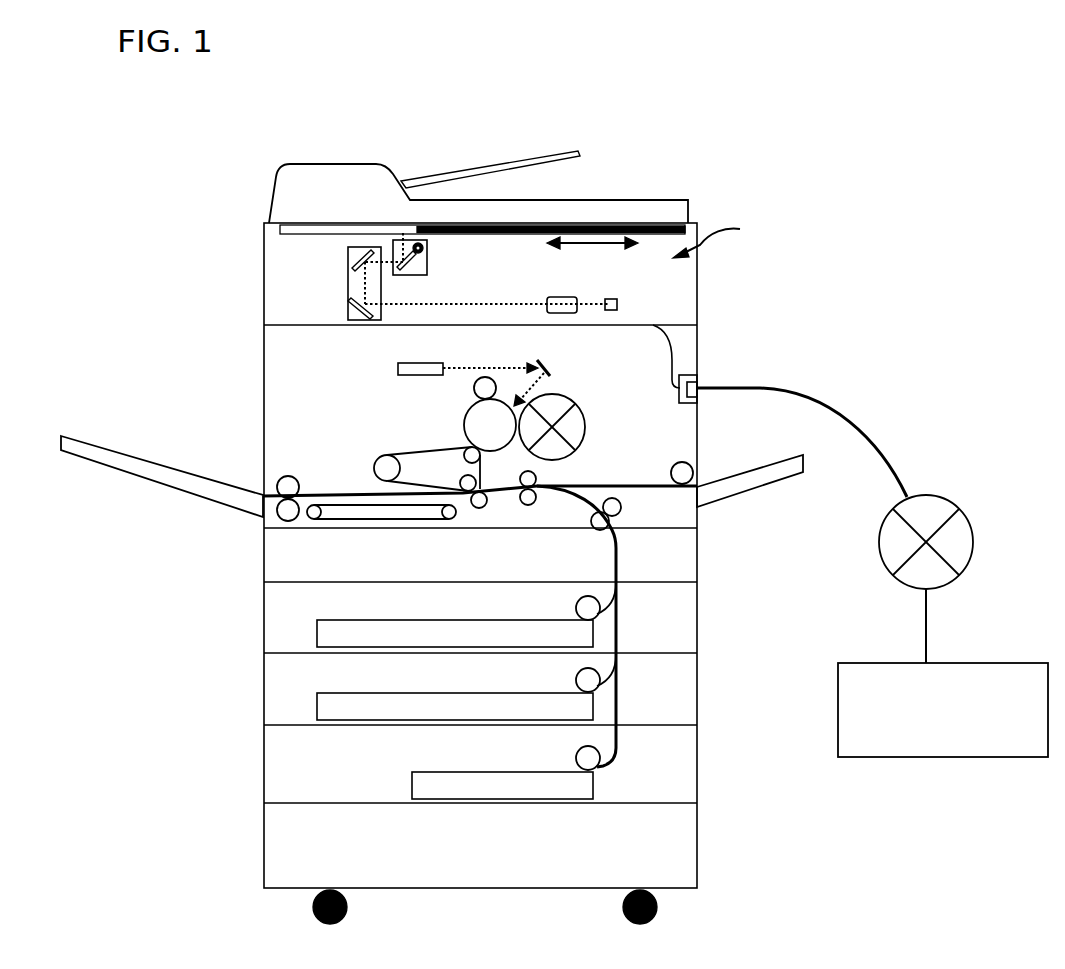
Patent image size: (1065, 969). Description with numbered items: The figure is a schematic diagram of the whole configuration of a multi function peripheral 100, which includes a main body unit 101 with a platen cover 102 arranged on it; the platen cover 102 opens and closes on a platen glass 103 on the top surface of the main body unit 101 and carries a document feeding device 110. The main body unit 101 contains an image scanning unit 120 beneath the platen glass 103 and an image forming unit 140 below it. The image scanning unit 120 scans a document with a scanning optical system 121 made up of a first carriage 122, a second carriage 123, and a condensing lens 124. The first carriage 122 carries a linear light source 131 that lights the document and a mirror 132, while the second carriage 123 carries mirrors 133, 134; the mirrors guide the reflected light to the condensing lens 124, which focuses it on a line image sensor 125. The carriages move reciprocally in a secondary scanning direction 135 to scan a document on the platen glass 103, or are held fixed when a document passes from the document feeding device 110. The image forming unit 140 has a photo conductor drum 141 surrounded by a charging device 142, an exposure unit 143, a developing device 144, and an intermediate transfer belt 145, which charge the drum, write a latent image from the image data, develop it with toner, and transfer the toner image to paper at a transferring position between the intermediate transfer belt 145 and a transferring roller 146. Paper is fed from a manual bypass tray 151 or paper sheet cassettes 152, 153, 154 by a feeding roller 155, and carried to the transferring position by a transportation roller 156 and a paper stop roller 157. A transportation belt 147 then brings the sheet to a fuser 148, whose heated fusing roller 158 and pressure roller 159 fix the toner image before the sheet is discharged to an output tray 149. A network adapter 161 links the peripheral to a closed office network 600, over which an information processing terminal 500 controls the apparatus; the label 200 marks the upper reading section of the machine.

The multi function peripheral 100 is at (723, 128).
The main body unit 101 is at (244, 337).
The platen cover 102 is at (244, 172).
The platen glass 103 is at (598, 222).
The document feeding device 110 is at (327, 166).
The image scanning unit 120 is at (697, 290).
The scanning optical system 121 is at (731, 235).
The first carriage 122 is at (412, 276).
The second carriage 123 is at (347, 278).
The condensing lens 124 is at (576, 297).
The line image sensor 125 is at (618, 305).
The linear light source 131 is at (424, 248).
The mirror 132 is at (414, 263).
The mirror 133 is at (348, 254).
The mirror 134 is at (348, 318).
The secondary scanning direction 135 is at (592, 255).
The image forming unit 140 is at (697, 337).
The photo conductor drum 141 is at (473, 420).
The charging device 142 is at (474, 388).
The exposure unit 143 is at (398, 368).
The developing device 144 is at (582, 409).
The intermediate transfer belt 145 is at (397, 452).
The transferring roller 146 is at (479, 509).
The transportation belt 147 is at (328, 505).
The fuser 148 is at (200, 475).
The output tray 149 is at (85, 448).
The manual bypass tray 151 is at (743, 488).
The paper sheet cassette 152 is at (317, 630).
The paper sheet cassette 153 is at (317, 703).
The paper sheet cassette 154 is at (412, 783).
The feeding roller 155 is at (692, 467).
The transportation roller 156 is at (621, 508).
The paper stop roller 157 is at (530, 506).
The fusing roller 158 is at (281, 479).
The pressure roller 159 is at (279, 507).
The network adapter 161 is at (698, 383).
The reading unit 200 is at (688, 203).
The information processing terminal 500 is at (876, 662).
The network 600 is at (944, 497).